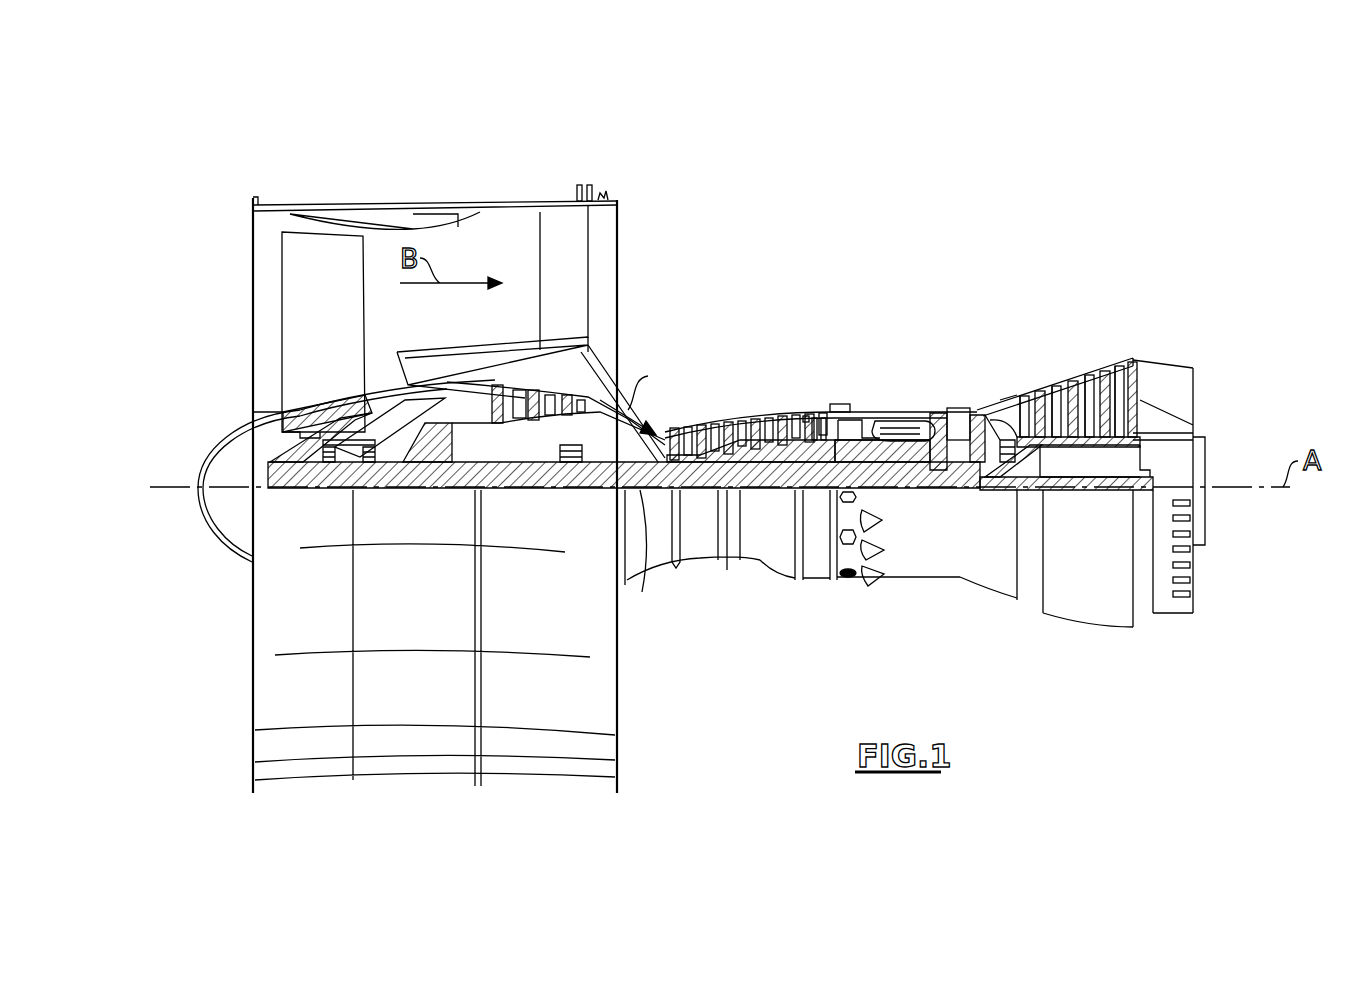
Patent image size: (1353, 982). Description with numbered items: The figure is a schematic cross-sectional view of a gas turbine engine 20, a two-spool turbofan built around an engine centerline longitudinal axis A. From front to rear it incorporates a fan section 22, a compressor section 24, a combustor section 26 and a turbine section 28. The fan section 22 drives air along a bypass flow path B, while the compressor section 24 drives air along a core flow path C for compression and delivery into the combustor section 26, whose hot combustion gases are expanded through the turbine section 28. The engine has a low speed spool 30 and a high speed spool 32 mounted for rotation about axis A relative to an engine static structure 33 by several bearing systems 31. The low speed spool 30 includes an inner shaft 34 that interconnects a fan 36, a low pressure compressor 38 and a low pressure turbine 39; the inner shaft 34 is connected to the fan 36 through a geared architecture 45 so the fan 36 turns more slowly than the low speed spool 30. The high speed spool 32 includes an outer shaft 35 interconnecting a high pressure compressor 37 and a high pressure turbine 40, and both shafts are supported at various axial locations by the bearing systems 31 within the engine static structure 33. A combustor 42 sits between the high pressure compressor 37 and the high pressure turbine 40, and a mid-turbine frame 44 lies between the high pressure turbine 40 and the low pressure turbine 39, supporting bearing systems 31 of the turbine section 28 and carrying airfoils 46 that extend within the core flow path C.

The gas turbine engine 20 is at (889, 259).
The fan section 22 is at (364, 188).
The compressor section 24 is at (660, 396).
The combustor section 26 is at (888, 391).
The turbine section 28 is at (1034, 350).
The low speed spool 30 is at (773, 491).
The bearing systems 31 is at (347, 468).
The high speed spool 32 is at (816, 435).
The engine static structure 33 is at (812, 577).
The inner shaft 34 is at (645, 565).
The outer shaft 35 is at (893, 476).
The fan 36 is at (339, 338).
The high pressure compressor 37 is at (748, 460).
The low pressure compressor 38 is at (590, 344).
The low pressure turbine 39 is at (1085, 380).
The high pressure turbine 40 is at (960, 430).
The combustor 42 is at (890, 428).
The mid-turbine frame 44 is at (996, 402).
The geared architecture 45 is at (440, 462).
The airfoils 46 is at (1023, 448).